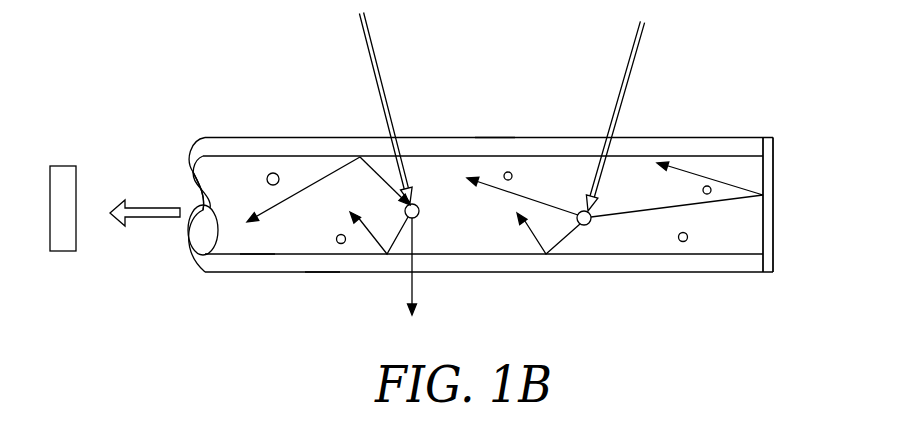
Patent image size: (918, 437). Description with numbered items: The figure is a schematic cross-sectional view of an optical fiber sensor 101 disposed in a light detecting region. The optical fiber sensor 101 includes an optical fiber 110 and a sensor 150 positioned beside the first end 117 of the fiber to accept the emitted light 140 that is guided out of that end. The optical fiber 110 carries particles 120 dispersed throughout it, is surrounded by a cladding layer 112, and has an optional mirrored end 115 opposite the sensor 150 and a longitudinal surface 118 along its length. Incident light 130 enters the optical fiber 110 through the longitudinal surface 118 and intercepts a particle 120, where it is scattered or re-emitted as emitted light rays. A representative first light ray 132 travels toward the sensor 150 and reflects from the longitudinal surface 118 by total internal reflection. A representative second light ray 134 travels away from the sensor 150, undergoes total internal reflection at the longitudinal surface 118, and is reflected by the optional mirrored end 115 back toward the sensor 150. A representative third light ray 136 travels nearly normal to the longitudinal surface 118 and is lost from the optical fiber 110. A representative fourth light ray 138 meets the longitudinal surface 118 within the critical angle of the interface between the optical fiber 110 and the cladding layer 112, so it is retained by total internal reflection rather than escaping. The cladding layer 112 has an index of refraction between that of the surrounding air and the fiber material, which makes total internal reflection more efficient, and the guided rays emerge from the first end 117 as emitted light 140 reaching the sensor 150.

The optical fiber sensor 101 is at (130, 79).
The optical fiber 110 is at (257, 255).
The cladding layer 112 is at (322, 265).
The mirrored end 115 is at (775, 150).
The first end 117 is at (176, 264).
The longitudinal surface 118 is at (494, 156).
The particles 120 is at (684, 242).
The incident light 130 is at (378, 65).
The first light ray 132 is at (315, 180).
The second light ray 134 is at (632, 215).
The third light ray 136 is at (413, 287).
The fourth light ray 138 is at (565, 238).
The emitted light 140 is at (147, 207).
The sensor 150 is at (57, 166).